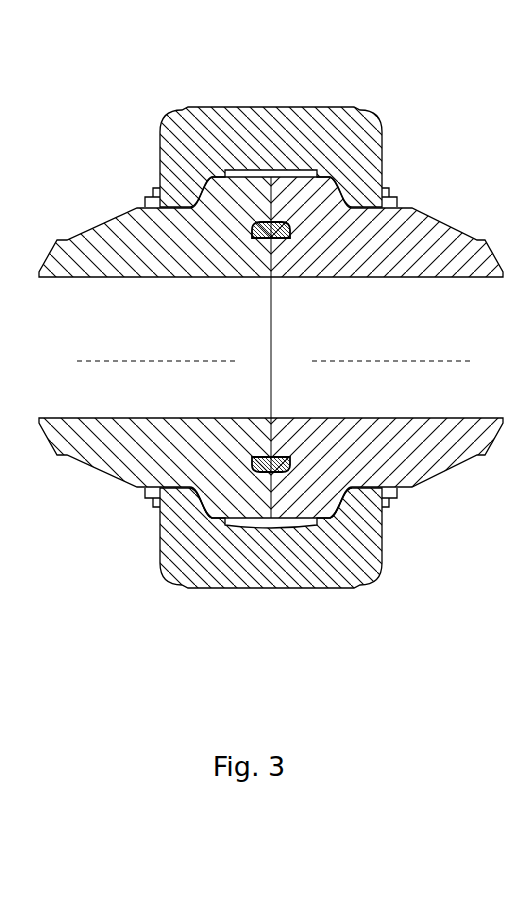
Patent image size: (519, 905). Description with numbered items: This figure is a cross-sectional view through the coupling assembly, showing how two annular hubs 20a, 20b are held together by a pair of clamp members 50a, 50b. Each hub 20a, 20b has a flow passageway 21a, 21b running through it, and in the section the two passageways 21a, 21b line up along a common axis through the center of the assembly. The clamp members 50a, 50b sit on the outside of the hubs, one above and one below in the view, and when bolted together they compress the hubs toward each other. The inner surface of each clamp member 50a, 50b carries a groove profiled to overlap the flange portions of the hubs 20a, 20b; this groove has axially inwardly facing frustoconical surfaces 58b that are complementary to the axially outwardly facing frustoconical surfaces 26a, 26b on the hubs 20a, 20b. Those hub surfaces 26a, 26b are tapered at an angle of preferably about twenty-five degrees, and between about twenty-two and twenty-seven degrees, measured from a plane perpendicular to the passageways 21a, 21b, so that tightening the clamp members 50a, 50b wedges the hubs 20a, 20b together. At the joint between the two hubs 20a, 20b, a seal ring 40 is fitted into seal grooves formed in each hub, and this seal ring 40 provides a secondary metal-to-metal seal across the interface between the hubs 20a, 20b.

The annular hub 20a is at (438, 238).
The annular hub 20b is at (92, 240).
The flow passageway 21a is at (392, 346).
The flow passageway 21b is at (157, 346).
The axially outwardly facing frustoconical surface 26a is at (342, 512).
The axially outwardly facing frustoconical surface 26b is at (200, 512).
The seal ring 40 is at (233, 202).
The clamp member 50a is at (265, 120).
The clamp member 50b is at (302, 573).
The axially inwardly facing frustoconical surface 58b is at (197, 497).